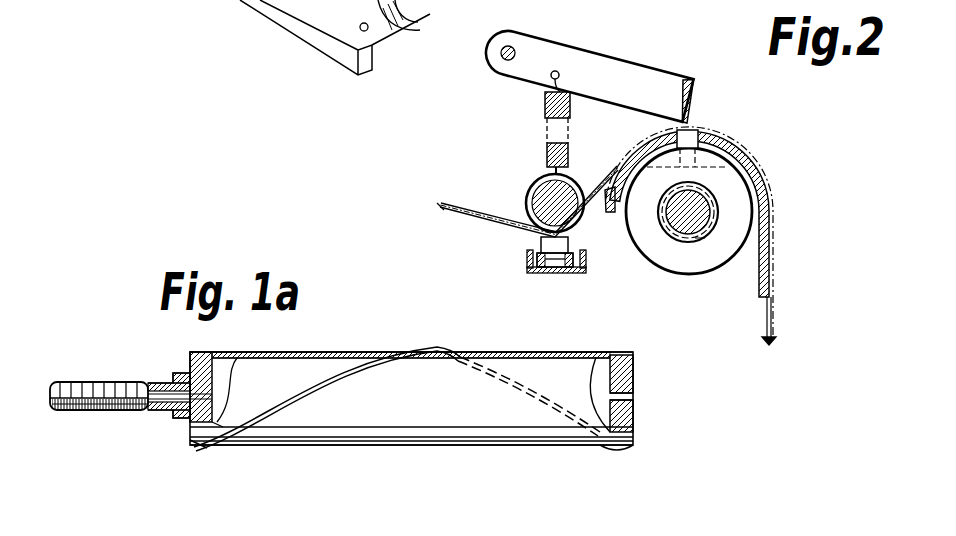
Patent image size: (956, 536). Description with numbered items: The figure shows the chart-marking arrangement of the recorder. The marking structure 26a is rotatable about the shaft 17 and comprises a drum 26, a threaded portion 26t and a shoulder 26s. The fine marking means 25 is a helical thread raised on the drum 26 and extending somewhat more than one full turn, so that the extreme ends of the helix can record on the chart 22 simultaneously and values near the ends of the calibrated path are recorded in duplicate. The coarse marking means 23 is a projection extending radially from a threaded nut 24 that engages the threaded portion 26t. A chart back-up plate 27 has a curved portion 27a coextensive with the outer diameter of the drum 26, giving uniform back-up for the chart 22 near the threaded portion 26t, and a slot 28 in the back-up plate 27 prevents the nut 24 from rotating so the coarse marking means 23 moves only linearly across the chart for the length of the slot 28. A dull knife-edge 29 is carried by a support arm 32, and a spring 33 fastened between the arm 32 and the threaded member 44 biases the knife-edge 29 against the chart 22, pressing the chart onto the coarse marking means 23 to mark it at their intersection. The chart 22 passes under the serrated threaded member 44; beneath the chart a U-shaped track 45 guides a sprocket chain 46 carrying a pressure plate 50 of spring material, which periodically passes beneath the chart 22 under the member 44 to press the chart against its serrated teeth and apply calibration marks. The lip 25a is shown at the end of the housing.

In FIG. 2, the shaft 17 is at (709, 213).
In FIG. 2, the chart 22 is at (772, 326).
In FIG. 2, the coarse marking means 23 is at (708, 146).
In FIG. 2, the threaded nut 24 is at (679, 268).
In FIG. 1A, the fine marking means 25 is at (203, 448).
In FIG. 1A, the tape guide lip 25a is at (601, 447).
In FIG. 1A, the drum 26 is at (409, 433).
In FIG. 1A, the structure 26a is at (352, 503).
In FIG. 1A, the shoulder 26s is at (180, 420).
In FIG. 2, the threaded portion 26t is at (700, 242).
In FIG. 1A, the threaded portion 26t is at (90, 403).
In FIG. 2, the chart back-up plate 27 is at (759, 262).
In FIG. 2, the curved portion 27a is at (601, 212).
In FIG. 2, the slot 28 is at (700, 133).
In FIG. 2, the dull knife-edge 29 is at (690, 90).
In FIG. 2, the support arm 32 is at (641, 65).
In FIG. 2, the spring 33 is at (544, 113).
In FIG. 2, the threaded member 44 is at (539, 193).
In FIG. 2, the track 45 is at (527, 266).
In FIG. 2, the sprocket chain 46 is at (578, 274).
In FIG. 2, the pressure plate 50 is at (545, 239).